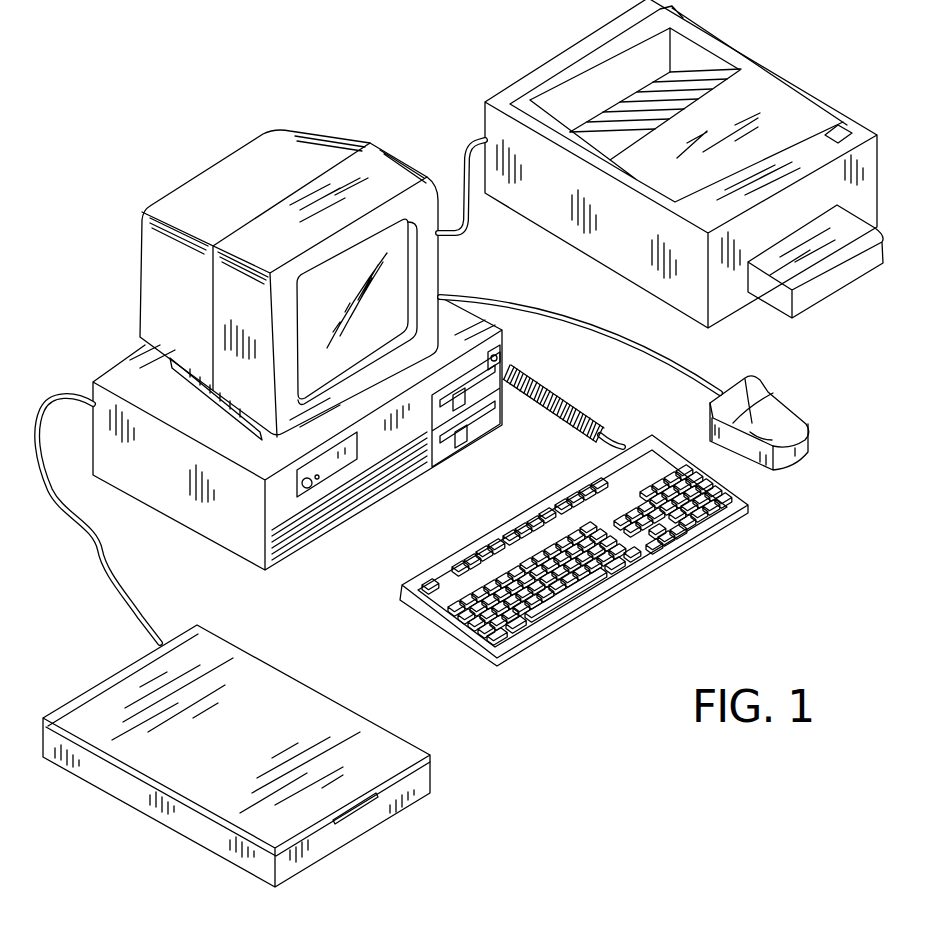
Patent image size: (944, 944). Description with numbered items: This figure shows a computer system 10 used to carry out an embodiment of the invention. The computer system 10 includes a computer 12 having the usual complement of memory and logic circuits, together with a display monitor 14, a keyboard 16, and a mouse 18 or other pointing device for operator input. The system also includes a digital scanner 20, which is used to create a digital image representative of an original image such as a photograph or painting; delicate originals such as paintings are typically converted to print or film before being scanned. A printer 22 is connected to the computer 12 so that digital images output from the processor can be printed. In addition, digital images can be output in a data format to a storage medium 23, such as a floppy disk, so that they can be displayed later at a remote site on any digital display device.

The computer system 10 is at (158, 133).
The computer 12 is at (237, 535).
The display monitor 14 is at (248, 175).
The keyboard 16 is at (587, 598).
The mouse 18 is at (782, 408).
The digital scanner 20 is at (343, 720).
The printer 22 is at (770, 97).
The storage medium 23 is at (461, 402).